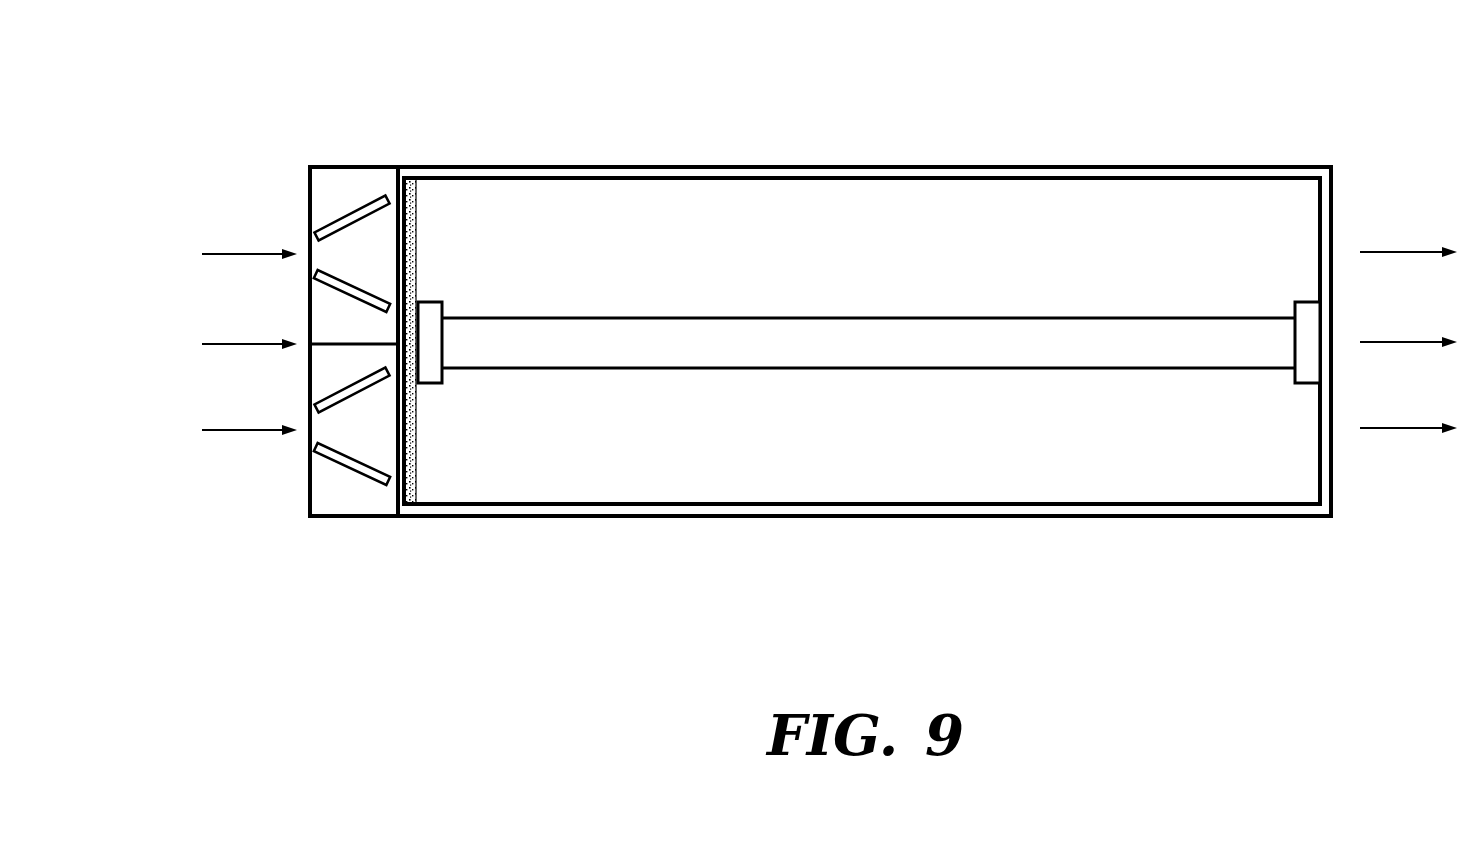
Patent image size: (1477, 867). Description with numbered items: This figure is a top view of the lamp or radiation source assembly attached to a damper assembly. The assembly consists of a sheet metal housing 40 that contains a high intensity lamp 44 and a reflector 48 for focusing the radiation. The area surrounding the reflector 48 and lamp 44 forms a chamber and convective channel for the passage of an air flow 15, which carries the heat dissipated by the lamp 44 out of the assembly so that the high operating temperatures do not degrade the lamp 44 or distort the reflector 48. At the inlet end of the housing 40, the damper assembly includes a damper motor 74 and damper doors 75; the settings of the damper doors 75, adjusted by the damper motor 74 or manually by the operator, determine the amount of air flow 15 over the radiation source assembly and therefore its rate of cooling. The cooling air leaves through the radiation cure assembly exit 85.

The sheet metal housing 40 is at (1136, 148).
The air flow 15 is at (236, 252).
The damper motor 74 is at (310, 348).
The damper doors 75 is at (352, 287).
The high intensity lamp 44 is at (782, 328).
The reflector 48 is at (810, 405).
The radiation cure assembly exit 85 is at (1297, 487).